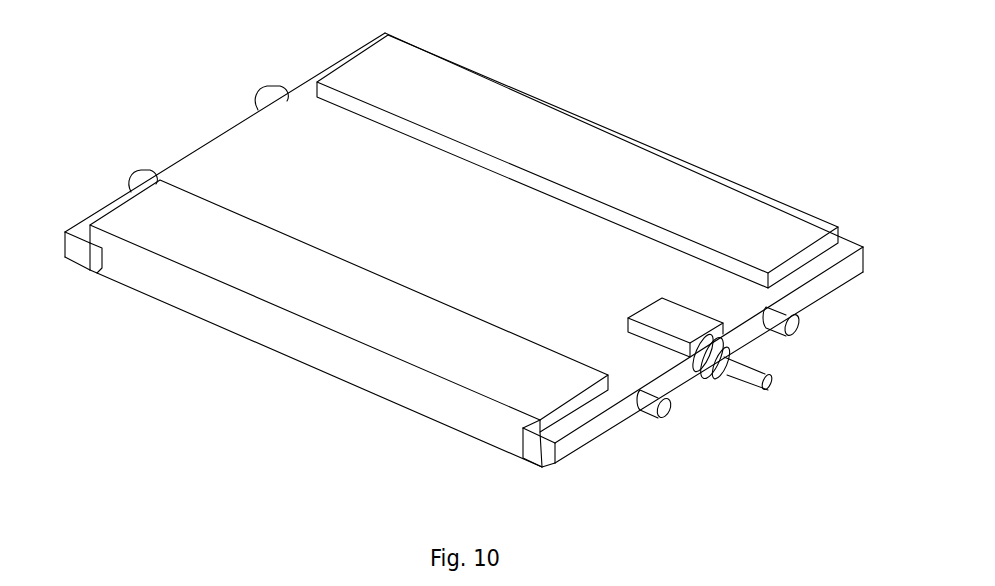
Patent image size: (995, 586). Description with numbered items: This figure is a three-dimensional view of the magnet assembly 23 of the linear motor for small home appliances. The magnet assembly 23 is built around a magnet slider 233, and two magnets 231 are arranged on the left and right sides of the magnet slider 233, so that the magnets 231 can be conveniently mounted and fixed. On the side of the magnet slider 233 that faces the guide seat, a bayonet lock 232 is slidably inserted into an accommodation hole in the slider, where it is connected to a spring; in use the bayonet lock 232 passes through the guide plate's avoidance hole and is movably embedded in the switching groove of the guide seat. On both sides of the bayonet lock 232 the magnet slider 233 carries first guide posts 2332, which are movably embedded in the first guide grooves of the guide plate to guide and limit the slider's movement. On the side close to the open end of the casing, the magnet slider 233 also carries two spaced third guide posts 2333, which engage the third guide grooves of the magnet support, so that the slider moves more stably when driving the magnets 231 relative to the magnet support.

The magnet assembly 23 is at (352, 406).
The magnet 231 is at (610, 152).
The bayonet lock 232 is at (765, 390).
The magnet slider 233 is at (583, 437).
The first guide post 2332 is at (667, 413).
The third guide post 2333 is at (265, 88).